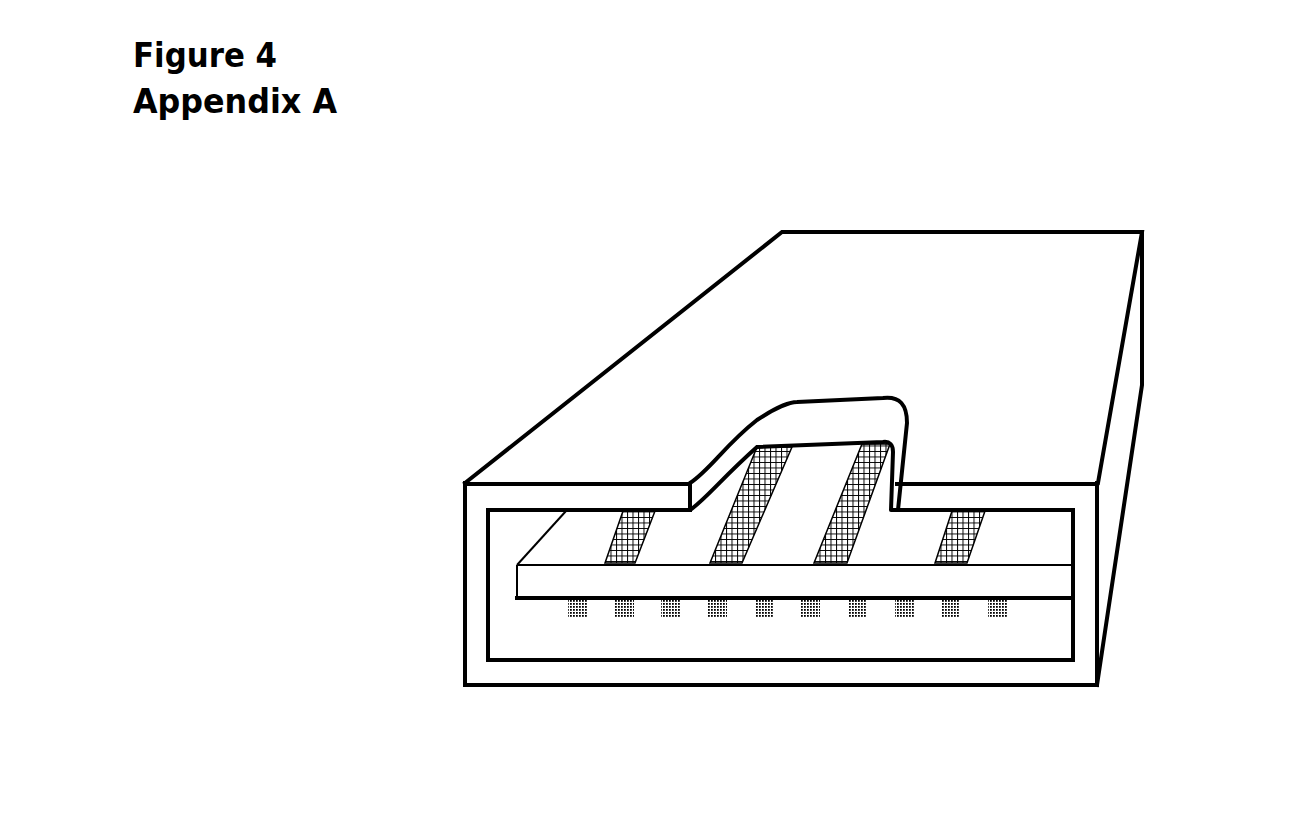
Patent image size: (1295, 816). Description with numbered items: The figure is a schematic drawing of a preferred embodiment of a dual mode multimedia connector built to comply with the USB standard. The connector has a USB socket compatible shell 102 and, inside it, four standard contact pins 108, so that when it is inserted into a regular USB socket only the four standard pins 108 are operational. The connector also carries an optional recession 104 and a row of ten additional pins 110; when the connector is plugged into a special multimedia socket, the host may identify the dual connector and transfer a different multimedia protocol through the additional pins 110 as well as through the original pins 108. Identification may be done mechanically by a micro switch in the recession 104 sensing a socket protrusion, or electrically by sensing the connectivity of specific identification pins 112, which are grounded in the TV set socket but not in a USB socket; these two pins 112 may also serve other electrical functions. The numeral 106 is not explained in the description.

The USB socket compatible shell 102 is at (722, 279).
The recession 104 is at (805, 418).
The substrate plate 106 is at (535, 572).
The contact pins 108 is at (633, 512).
The additional pins 110 is at (577, 617).
The identification pins 112 is at (950, 617).